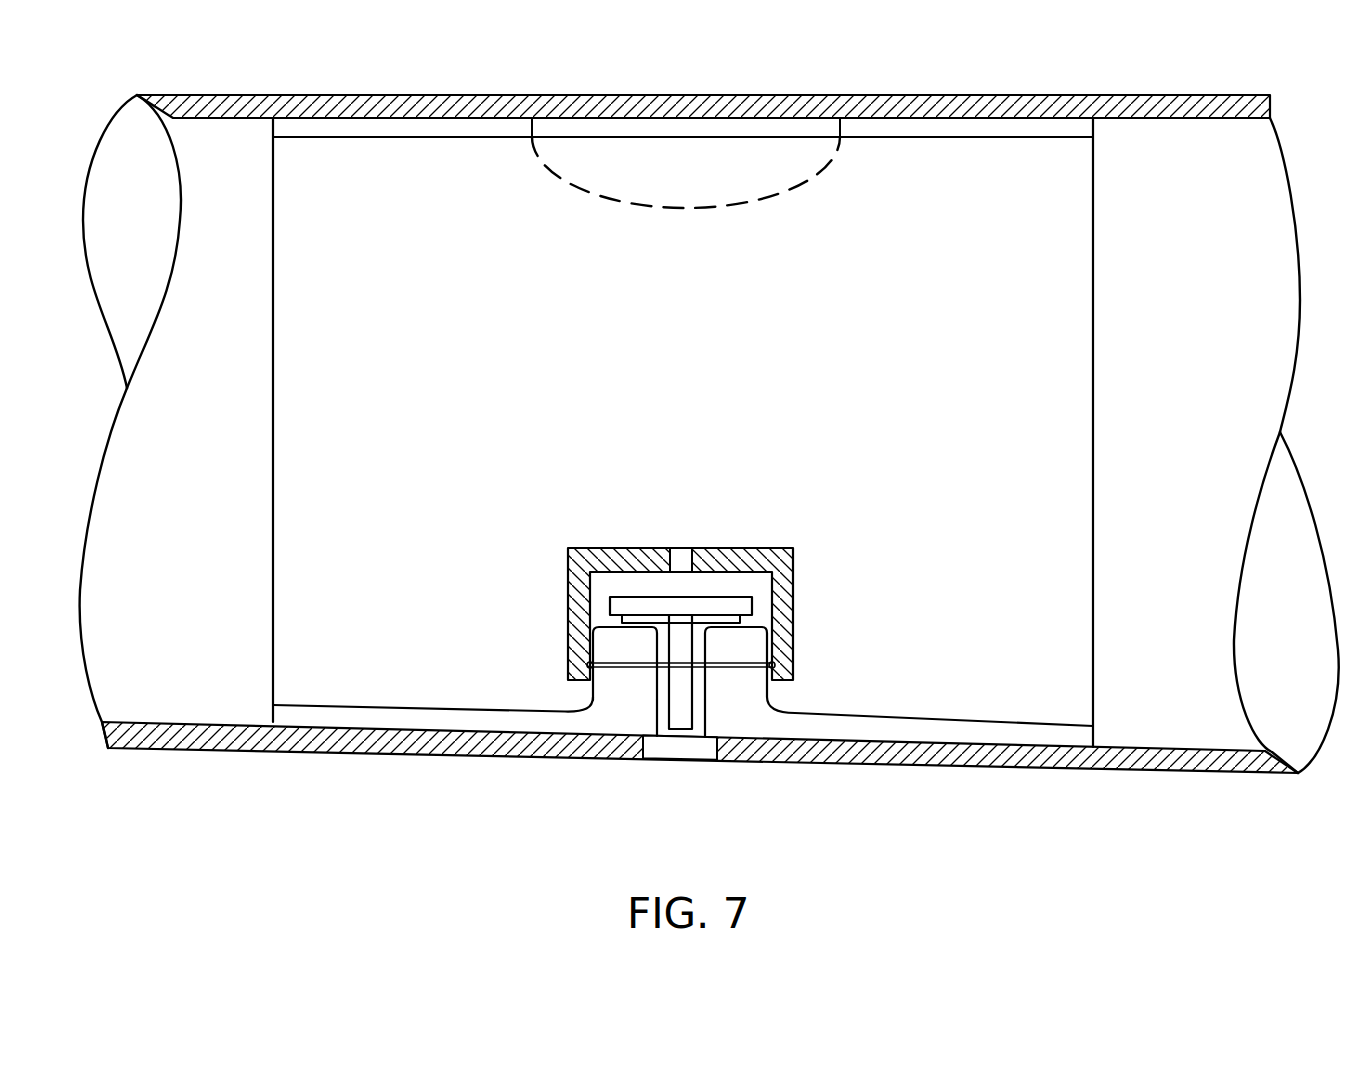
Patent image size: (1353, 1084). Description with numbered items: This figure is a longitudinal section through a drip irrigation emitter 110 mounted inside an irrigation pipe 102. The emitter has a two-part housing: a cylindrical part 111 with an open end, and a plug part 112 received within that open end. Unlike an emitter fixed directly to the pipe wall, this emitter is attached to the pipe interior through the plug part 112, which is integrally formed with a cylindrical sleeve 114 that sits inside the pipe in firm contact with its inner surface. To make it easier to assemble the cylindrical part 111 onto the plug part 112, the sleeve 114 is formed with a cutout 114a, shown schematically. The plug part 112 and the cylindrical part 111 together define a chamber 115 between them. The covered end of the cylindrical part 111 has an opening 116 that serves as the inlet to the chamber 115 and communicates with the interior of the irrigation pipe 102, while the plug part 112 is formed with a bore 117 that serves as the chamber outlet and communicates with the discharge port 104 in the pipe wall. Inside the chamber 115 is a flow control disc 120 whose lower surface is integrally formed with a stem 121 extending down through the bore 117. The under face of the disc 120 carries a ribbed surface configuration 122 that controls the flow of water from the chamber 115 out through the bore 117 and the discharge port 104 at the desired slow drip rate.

The irrigation pipe 102 is at (930, 757).
The discharge port 104 is at (680, 752).
The emitter 110 is at (671, 646).
The cylindrical part 111 is at (588, 665).
The plug part 112 is at (623, 695).
The cylindrical sleeve 114 is at (923, 732).
The cutout 114a is at (727, 127).
The chamber 115 is at (615, 583).
The opening 116 is at (680, 560).
The bore 117 is at (697, 735).
The flow control disc 120 is at (733, 608).
The stem 121 is at (682, 688).
The ribbed surface configuration 122 is at (620, 620).